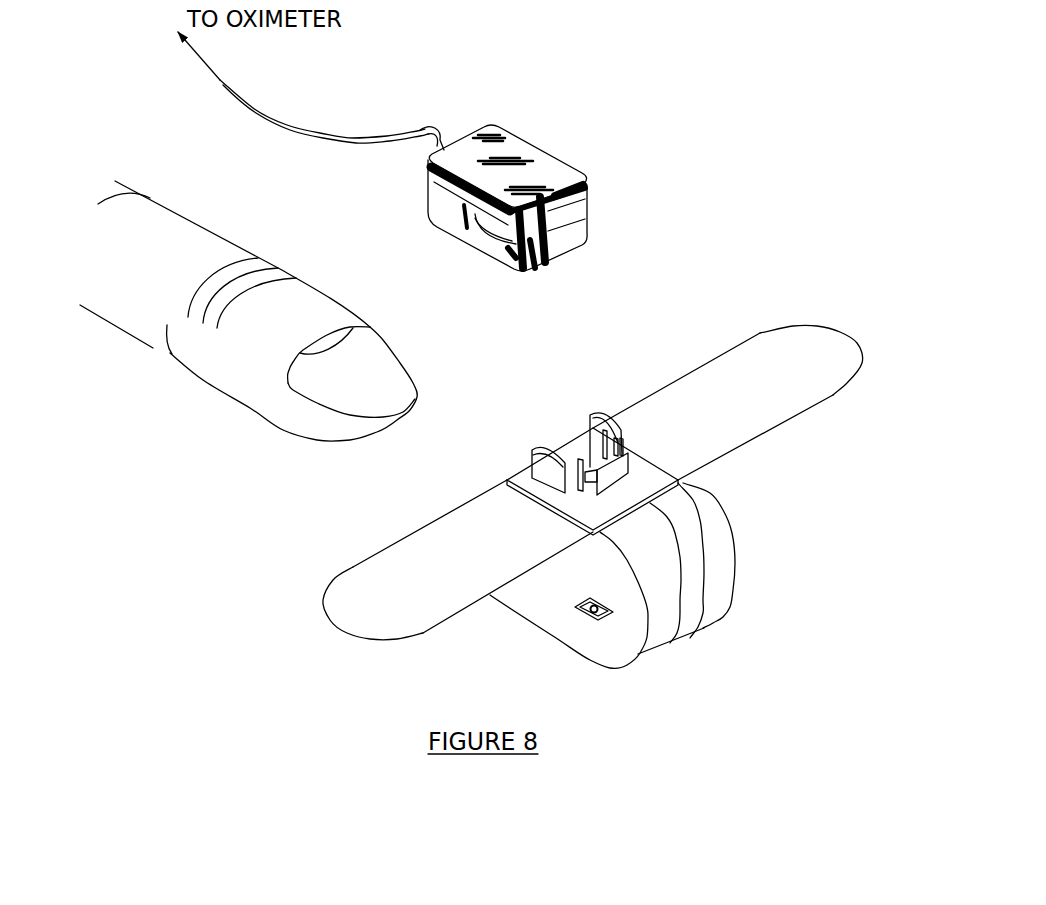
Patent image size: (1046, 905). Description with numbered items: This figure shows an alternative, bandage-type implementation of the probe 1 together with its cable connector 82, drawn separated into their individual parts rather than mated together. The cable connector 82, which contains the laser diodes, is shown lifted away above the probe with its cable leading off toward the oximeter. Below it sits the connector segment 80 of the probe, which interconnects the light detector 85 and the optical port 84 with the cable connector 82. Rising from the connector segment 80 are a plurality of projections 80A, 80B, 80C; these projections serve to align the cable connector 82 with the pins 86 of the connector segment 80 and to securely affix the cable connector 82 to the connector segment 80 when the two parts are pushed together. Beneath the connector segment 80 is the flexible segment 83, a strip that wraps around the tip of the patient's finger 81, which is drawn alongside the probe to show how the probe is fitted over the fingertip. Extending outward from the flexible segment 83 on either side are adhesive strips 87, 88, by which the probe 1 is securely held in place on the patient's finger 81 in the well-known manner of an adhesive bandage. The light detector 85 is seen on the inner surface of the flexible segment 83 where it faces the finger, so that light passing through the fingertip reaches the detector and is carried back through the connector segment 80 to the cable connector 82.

The probe 1 is at (822, 487).
The connector segment 80 is at (503, 478).
The projection 80A is at (602, 412).
The projection 80B is at (530, 442).
The projection 80C is at (618, 474).
The patient's finger 81 is at (208, 357).
The cable connector 82 is at (547, 168).
The flexible segment 83 is at (720, 568).
The optical port 84 is at (585, 462).
The light detector 85 is at (600, 630).
The pins 86 is at (626, 433).
The adhesive strip 87 is at (352, 567).
The adhesive strip 88 is at (761, 331).